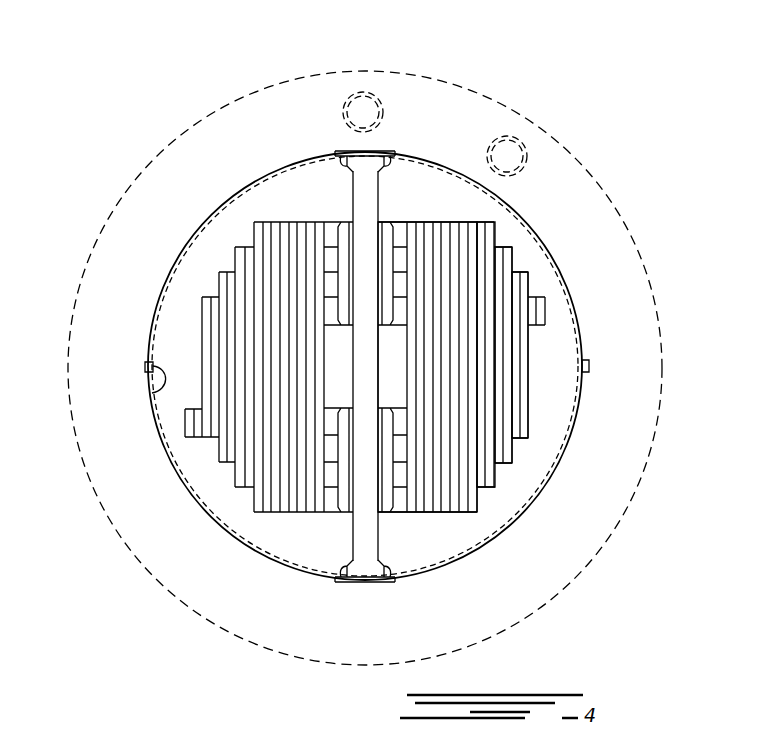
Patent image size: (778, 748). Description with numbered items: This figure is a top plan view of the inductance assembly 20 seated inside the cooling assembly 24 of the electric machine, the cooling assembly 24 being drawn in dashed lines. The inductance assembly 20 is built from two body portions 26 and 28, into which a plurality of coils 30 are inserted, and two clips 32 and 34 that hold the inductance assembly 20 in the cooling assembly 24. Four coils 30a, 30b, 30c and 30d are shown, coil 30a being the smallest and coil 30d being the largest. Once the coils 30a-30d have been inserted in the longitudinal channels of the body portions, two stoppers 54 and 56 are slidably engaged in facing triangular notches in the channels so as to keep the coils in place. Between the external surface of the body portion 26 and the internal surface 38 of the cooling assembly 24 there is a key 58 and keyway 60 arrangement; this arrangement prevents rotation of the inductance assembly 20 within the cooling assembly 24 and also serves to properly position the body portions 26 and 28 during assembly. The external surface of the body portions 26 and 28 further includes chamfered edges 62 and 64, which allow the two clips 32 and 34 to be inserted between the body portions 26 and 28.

The inductance assembly 20 is at (535, 253).
The cooling assembly 24 is at (623, 430).
The body portion 26 is at (275, 205).
The body portion 28 is at (427, 193).
The coils 30 is at (490, 353).
The coil 30a is at (527, 440).
The coil 30b is at (505, 463).
The coil 30c is at (492, 487).
The coil 30d is at (472, 512).
The clip 32 is at (362, 151).
The clip 34 is at (368, 583).
The internal surface 38 is at (157, 432).
The stopper 54 is at (342, 257).
The stopper 56 is at (343, 455).
The key 58 is at (153, 393).
The keyway 60 is at (147, 360).
The chamfered edge 62 is at (350, 150).
The chamfered edge 64 is at (382, 152).